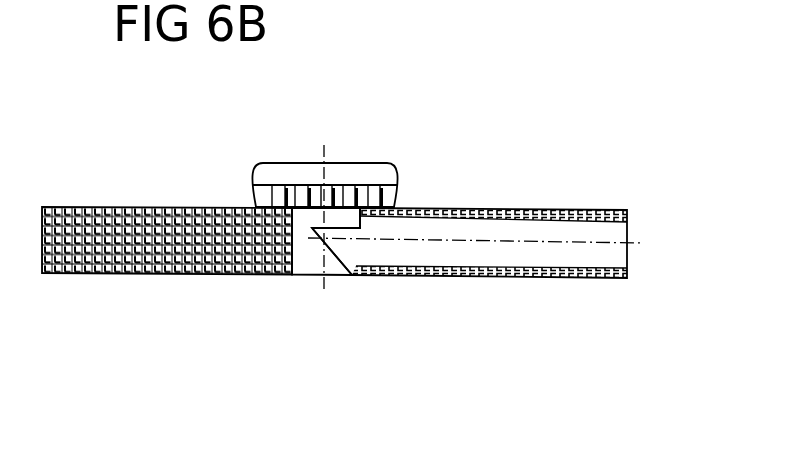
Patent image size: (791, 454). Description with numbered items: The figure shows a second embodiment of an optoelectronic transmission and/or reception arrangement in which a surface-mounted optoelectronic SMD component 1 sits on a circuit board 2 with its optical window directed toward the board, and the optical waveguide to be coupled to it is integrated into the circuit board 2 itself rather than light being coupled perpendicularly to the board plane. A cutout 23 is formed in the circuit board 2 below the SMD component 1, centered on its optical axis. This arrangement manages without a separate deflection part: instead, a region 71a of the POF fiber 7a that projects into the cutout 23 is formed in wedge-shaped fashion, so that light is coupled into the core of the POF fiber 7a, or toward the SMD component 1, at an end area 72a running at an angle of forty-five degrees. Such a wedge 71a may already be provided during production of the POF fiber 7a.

The SMD component 1 is at (367, 172).
The circuit board 2 is at (125, 205).
The POF fiber 7a is at (613, 232).
The cutout 23 is at (307, 272).
The wedge-shaped region 71a is at (330, 235).
The end area 72a is at (343, 250).